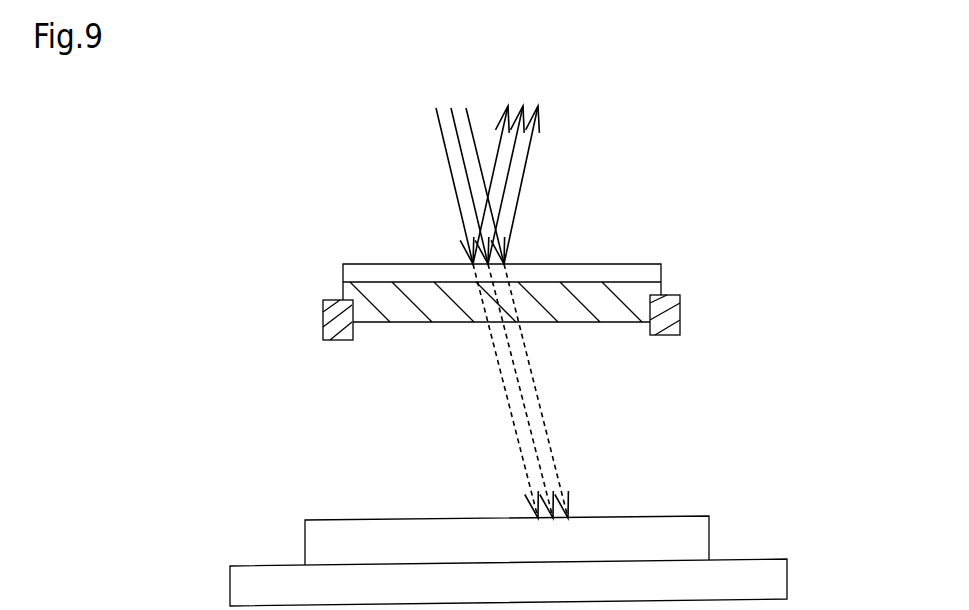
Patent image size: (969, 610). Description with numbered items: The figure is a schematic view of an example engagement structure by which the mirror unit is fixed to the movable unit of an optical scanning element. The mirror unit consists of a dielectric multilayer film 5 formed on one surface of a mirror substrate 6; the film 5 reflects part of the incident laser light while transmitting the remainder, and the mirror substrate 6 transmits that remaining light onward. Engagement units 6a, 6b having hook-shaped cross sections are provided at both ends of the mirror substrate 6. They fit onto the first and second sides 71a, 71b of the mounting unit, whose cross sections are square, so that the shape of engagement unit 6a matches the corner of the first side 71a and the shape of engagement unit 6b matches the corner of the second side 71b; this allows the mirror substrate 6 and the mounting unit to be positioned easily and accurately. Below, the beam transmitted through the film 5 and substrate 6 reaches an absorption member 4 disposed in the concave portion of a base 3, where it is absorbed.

The base 3 is at (787, 578).
The absorption member 4 is at (709, 533).
The dielectric multilayer film 5 is at (610, 263).
The mirror substrate 6 is at (573, 313).
The engagement unit 6a is at (680, 303).
The engagement unit 6b is at (360, 312).
The first side 71a is at (671, 295).
The second side 71b is at (323, 330).